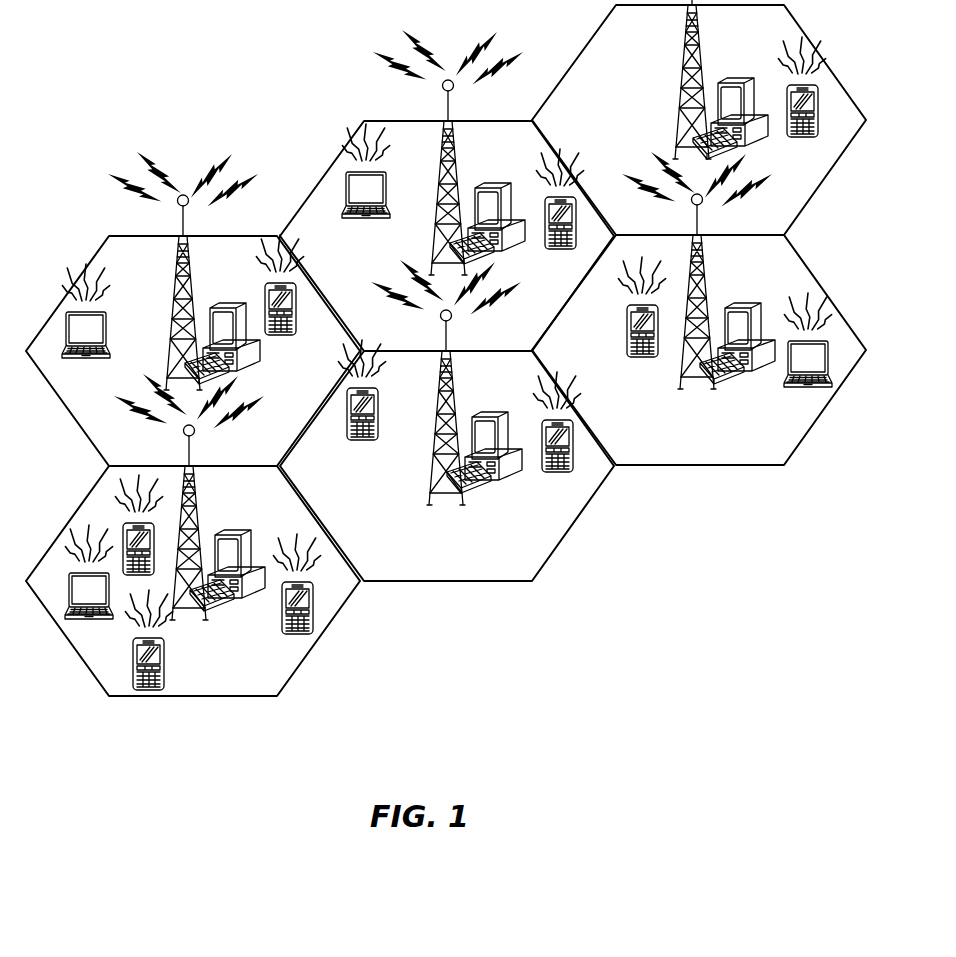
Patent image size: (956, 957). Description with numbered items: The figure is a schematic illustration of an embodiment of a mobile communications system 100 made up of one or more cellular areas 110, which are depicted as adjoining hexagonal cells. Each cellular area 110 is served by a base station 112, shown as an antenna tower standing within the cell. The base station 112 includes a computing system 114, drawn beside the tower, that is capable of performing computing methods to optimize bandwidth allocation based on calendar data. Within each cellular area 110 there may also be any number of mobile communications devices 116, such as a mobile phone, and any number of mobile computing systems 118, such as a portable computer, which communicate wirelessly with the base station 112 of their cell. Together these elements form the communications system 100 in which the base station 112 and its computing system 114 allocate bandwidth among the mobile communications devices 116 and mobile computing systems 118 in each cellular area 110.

The mobile communications system 100 is at (712, 550).
The cellular area 110 is at (340, 612).
The base station 112 is at (445, 497).
The computing system 114 is at (503, 470).
The mobile communications device 116 is at (300, 632).
The mobile computing system 118 is at (70, 625).